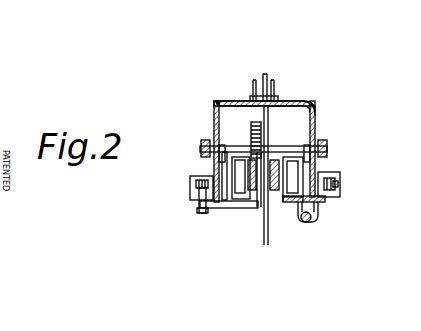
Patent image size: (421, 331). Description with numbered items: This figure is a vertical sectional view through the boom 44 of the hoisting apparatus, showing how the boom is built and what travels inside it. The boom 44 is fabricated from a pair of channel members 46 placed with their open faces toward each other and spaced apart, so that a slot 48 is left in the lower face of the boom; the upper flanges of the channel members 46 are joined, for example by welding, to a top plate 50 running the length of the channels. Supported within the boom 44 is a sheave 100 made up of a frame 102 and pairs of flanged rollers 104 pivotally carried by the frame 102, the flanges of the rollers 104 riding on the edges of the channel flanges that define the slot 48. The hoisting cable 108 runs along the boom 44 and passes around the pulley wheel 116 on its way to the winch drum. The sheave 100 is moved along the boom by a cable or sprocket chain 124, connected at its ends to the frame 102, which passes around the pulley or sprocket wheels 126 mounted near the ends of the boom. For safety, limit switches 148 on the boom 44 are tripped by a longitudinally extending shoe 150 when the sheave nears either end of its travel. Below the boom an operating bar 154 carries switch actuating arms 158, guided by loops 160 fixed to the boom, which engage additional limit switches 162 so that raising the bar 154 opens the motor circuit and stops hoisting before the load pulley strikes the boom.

The boom 44 is at (318, 121).
The channel members 46 is at (213, 128).
The slot 48 is at (293, 205).
The top plate 50 is at (273, 163).
The sheave 100 is at (257, 206).
The frame 102 is at (316, 110).
The flanged rollers 104 is at (240, 183).
The hoisting cable 108 is at (265, 237).
The pulley wheel 116 is at (270, 85).
The cable 124 is at (253, 122).
The pulley wheels 126 is at (252, 132).
The limit switches 148 is at (193, 196).
The shoe 150 is at (200, 212).
The operating bar 154 is at (312, 222).
The switch actuating arms 158 is at (330, 175).
The loops 160 is at (326, 201).
The limit switches 162 is at (338, 188).